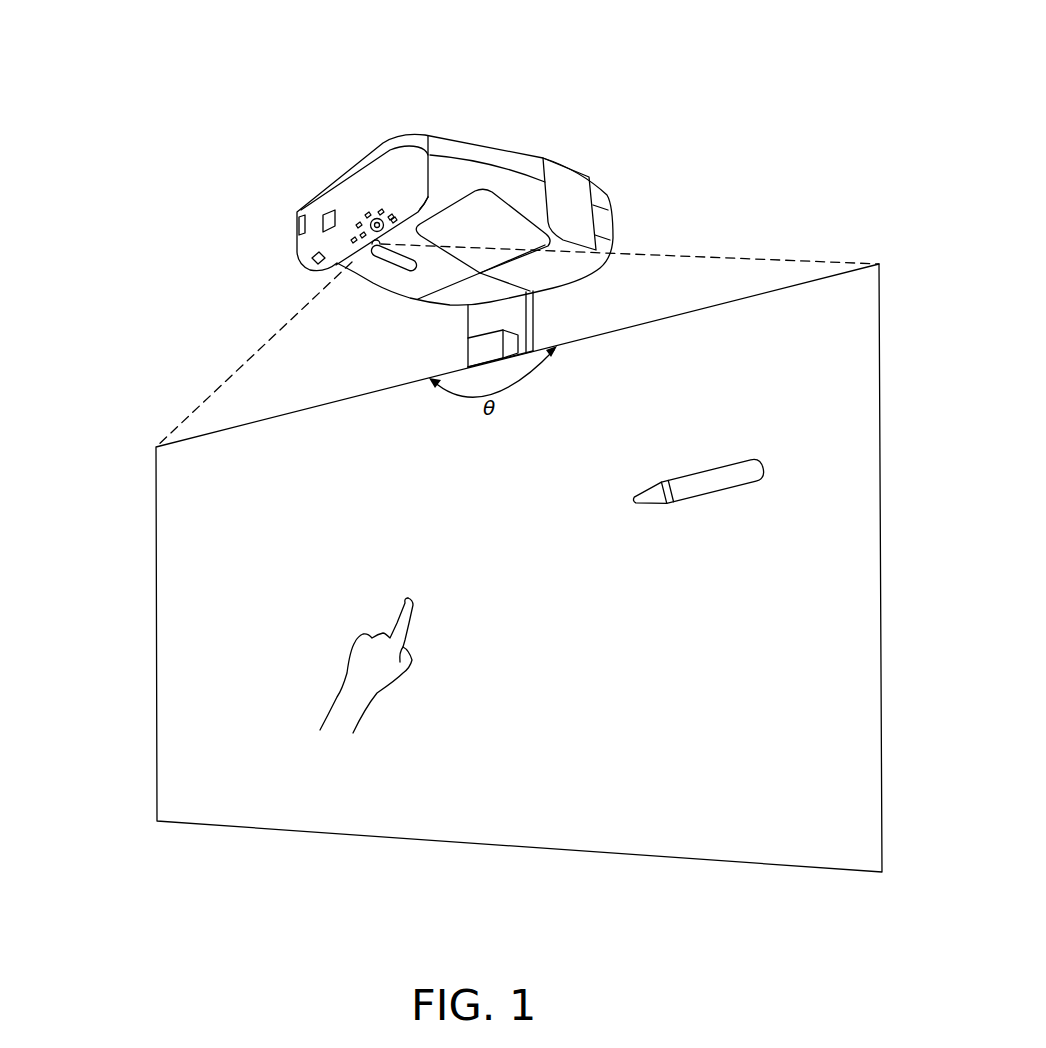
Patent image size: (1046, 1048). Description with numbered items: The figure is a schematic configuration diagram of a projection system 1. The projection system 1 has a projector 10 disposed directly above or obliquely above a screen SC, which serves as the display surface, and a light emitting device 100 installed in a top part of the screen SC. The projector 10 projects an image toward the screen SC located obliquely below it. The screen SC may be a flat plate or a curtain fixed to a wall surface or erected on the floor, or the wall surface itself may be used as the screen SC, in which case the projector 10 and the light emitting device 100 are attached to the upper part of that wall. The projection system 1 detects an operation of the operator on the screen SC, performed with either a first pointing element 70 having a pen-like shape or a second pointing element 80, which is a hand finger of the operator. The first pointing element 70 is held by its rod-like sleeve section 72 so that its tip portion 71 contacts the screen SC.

The projection system 1 is at (703, 98).
The projector 10 is at (472, 143).
The light emitting device 100 is at (468, 344).
The first pointing element 70 is at (678, 483).
The tip portion 71 is at (642, 492).
The sleeve section 72 is at (710, 484).
The second pointing element 80 is at (407, 597).
The screen SC is at (156, 615).